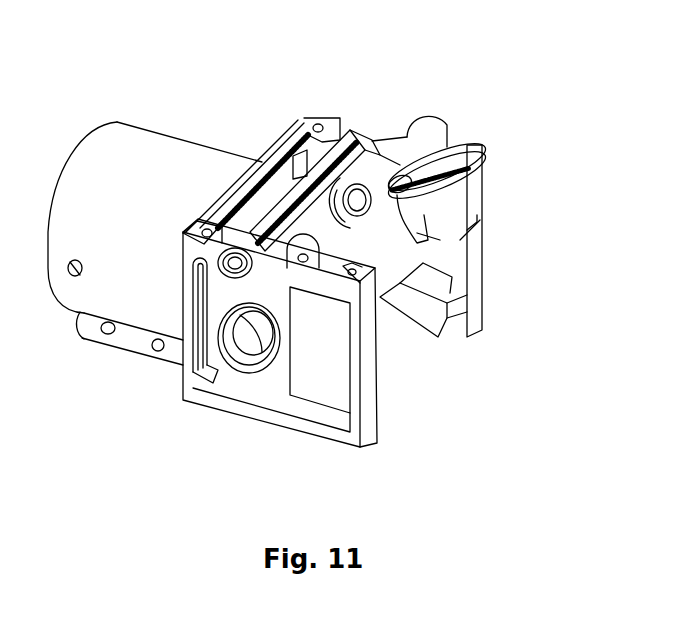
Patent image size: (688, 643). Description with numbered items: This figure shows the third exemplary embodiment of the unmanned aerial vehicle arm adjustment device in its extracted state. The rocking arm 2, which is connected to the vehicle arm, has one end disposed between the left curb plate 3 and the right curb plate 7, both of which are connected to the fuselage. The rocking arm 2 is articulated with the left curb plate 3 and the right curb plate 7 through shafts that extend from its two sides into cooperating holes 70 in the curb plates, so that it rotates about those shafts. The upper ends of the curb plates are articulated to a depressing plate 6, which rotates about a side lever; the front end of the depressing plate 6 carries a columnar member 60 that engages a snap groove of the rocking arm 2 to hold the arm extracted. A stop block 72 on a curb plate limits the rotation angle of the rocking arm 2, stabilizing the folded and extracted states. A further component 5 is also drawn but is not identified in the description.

The rocking arm 2 is at (188, 140).
The left curb plate 3 is at (487, 240).
The shaft 5 is at (413, 123).
The depressing plate 6 is at (482, 143).
The right curb plate 7 is at (273, 423).
The columnar member 60 is at (357, 134).
The hole 70 is at (240, 345).
The stop block 72 is at (441, 296).